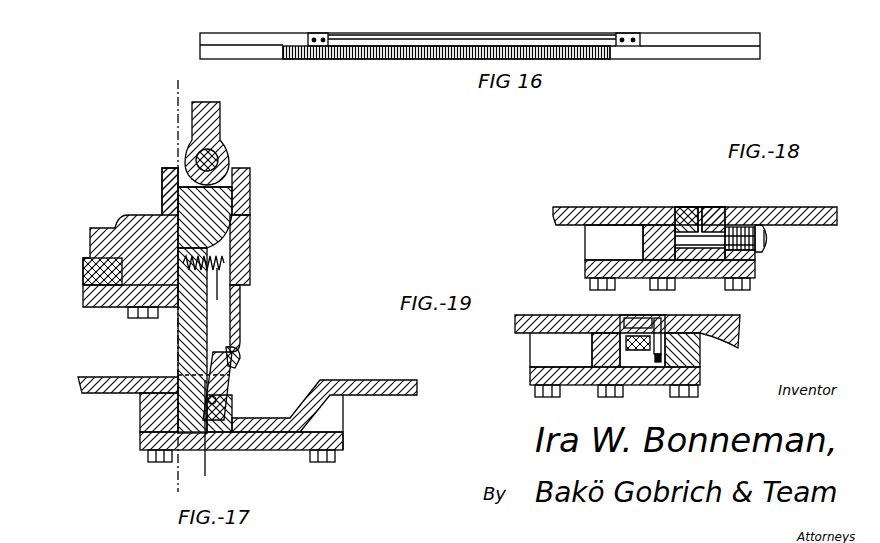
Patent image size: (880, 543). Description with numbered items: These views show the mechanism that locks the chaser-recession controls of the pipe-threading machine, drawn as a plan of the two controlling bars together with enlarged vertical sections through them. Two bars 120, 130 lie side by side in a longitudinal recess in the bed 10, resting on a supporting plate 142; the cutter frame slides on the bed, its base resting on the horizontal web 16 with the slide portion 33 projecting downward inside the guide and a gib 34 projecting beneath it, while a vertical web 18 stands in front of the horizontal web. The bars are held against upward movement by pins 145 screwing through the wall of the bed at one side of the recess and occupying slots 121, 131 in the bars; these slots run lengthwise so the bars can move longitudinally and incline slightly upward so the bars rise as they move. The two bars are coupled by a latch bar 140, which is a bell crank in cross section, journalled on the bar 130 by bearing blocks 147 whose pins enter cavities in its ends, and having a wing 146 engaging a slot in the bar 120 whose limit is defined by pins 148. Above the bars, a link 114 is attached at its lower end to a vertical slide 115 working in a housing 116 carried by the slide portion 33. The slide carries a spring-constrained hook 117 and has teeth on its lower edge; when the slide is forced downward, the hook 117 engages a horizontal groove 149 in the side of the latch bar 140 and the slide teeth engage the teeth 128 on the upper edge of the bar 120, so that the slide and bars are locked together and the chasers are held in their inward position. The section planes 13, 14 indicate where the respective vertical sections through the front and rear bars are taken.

In FIG. 17, the bed 10 is at (389, 395).
In FIG. 18, the bed 10 is at (570, 212).
In FIG. 19, the bed 10 is at (742, 310).
In FIG. 17, the section line 13— 13 is at (183, 77).
In FIG. 17, the section line 14— 14 is at (207, 347).
In FIG. 17, the horizontal web 16 is at (105, 276).
In FIG. 17, the vertical web 18 is at (250, 282).
In FIG. 17, the slide portion 33 is at (150, 215).
In FIG. 17, the gib 34 is at (120, 290).
In FIG. 17, the link 114 is at (220, 124).
In FIG. 17, the vertical slide 115 is at (220, 200).
In FIG. 17, the housing 116 is at (248, 178).
In FIG. 17, the hook 117 is at (232, 306).
In FIG. 16, the bar 120 is at (272, 52).
In FIG. 17, the bar 120 is at (190, 417).
In FIG. 18, the bar 120 is at (690, 218).
In FIG. 19, the bar 120 is at (622, 318).
In FIG. 18, the slot 121 is at (660, 242).
In FIG. 16, the teeth 128 is at (421, 59).
In FIG. 19, the teeth 128 is at (637, 322).
In FIG. 16, the bar 130 is at (287, 23).
In FIG. 17, the bar 130 is at (230, 420).
In FIG. 18, the bar 130 is at (702, 210).
In FIG. 19, the bar 130 is at (680, 362).
In FIG. 18, the slot 131 is at (722, 222).
In FIG. 16, the latch bar 140 is at (511, 33).
In FIG. 17, the latch bar 140 is at (230, 400).
In FIG. 17, the supporting plate 142 is at (135, 447).
In FIG. 18, the supporting plate 142 is at (753, 269).
In FIG. 18, the pin 145 is at (770, 242).
In FIG. 17, the wing 146 is at (180, 378).
In FIG. 16, the bearing block 147 is at (322, 33).
In FIG. 19, the bearing block 147 is at (668, 322).
In FIG. 19, the pin 148 is at (600, 350).
In FIG. 17, the horizontal groove 149 is at (240, 365).